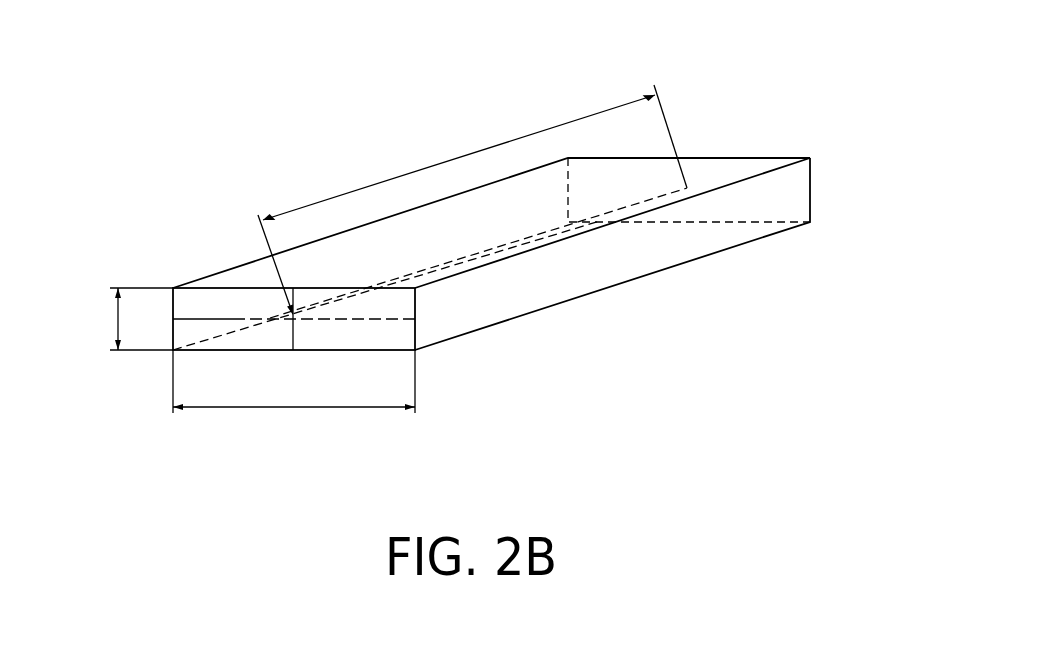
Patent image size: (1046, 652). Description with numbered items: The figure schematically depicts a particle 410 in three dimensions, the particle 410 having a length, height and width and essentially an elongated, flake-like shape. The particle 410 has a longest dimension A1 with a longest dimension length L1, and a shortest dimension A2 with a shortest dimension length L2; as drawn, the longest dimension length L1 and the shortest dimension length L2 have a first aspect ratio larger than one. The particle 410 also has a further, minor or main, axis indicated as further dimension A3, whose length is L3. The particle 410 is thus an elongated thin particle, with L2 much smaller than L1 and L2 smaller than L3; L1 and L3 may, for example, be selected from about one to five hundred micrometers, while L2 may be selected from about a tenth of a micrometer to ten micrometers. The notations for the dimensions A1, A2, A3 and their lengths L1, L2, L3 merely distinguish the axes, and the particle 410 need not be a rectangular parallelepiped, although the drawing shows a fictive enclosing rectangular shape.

The particle 410 is at (836, 124).
The longest dimension length L1 is at (450, 162).
The shortest dimension length L2 is at (118, 320).
The further dimension length L3 is at (288, 408).
The longest dimension A1 is at (530, 243).
The shortest dimension A2 is at (284, 334).
The further dimension A3 is at (372, 320).